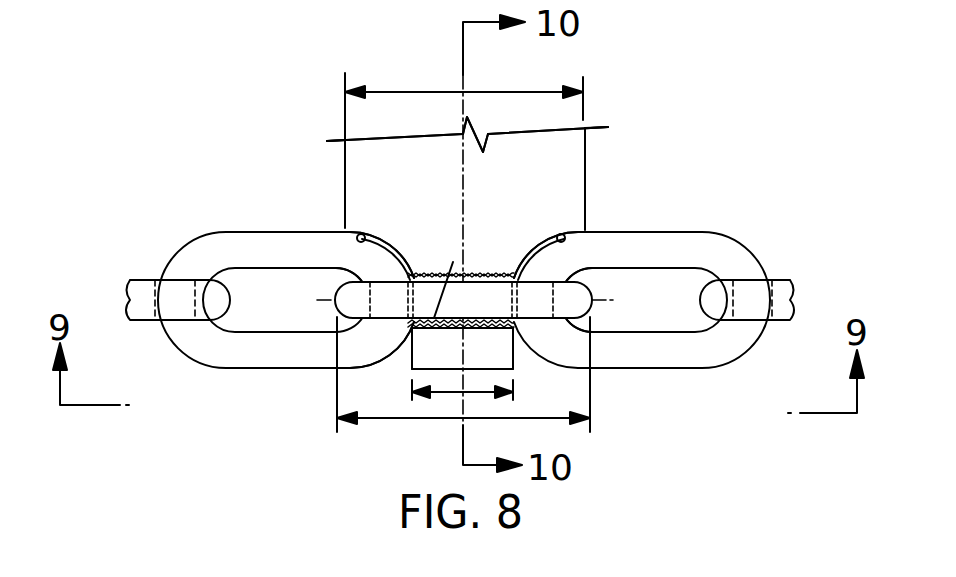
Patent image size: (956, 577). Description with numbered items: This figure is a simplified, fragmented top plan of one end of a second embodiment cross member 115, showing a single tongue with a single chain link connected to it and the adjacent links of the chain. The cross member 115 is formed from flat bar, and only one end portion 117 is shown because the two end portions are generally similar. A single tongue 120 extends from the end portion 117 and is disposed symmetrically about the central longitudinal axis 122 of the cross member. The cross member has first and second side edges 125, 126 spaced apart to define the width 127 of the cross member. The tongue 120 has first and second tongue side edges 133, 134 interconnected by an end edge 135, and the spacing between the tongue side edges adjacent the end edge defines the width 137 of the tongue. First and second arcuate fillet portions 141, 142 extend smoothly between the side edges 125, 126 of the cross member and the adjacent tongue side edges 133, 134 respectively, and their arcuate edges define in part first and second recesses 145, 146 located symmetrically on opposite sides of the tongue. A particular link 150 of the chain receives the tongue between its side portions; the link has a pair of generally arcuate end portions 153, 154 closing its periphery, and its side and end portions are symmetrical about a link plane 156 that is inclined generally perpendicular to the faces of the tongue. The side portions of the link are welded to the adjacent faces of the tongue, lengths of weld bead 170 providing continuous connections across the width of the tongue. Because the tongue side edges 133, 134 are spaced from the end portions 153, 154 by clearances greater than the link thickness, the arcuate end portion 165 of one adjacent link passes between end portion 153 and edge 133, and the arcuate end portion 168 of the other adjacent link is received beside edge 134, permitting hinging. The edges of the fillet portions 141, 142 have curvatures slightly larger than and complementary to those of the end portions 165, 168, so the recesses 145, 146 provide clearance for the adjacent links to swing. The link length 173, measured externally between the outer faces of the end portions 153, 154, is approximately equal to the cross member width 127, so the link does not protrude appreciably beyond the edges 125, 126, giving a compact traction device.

The cross member 115 is at (612, 145).
The end portion 117 is at (467, 134).
The tongue 120 is at (481, 364).
The central longitudinal axis 122 is at (463, 163).
The first side edge 125 is at (345, 153).
The second side edge 126 is at (585, 168).
The width 127 is at (425, 90).
The first tongue side edge 133 is at (402, 334).
The second tongue side edge 134 is at (515, 350).
The end edge 135 is at (432, 369).
The width of the tongue 137 is at (441, 390).
The first arcuate fillet portion 141 is at (364, 234).
The second arcuate fillet portion 142 is at (561, 234).
The first recess 145 is at (318, 284).
The second recess 146 is at (606, 281).
The particular link 150 is at (500, 268).
The first arcuate end portion 153 is at (352, 278).
The second arcuate end portion 154 is at (570, 277).
The link plane 156 is at (604, 302).
The arcuate end portion 165 is at (382, 273).
The arcuate end portion 168 is at (545, 268).
The weld bead 170 is at (466, 280).
The link length 173 is at (427, 420).